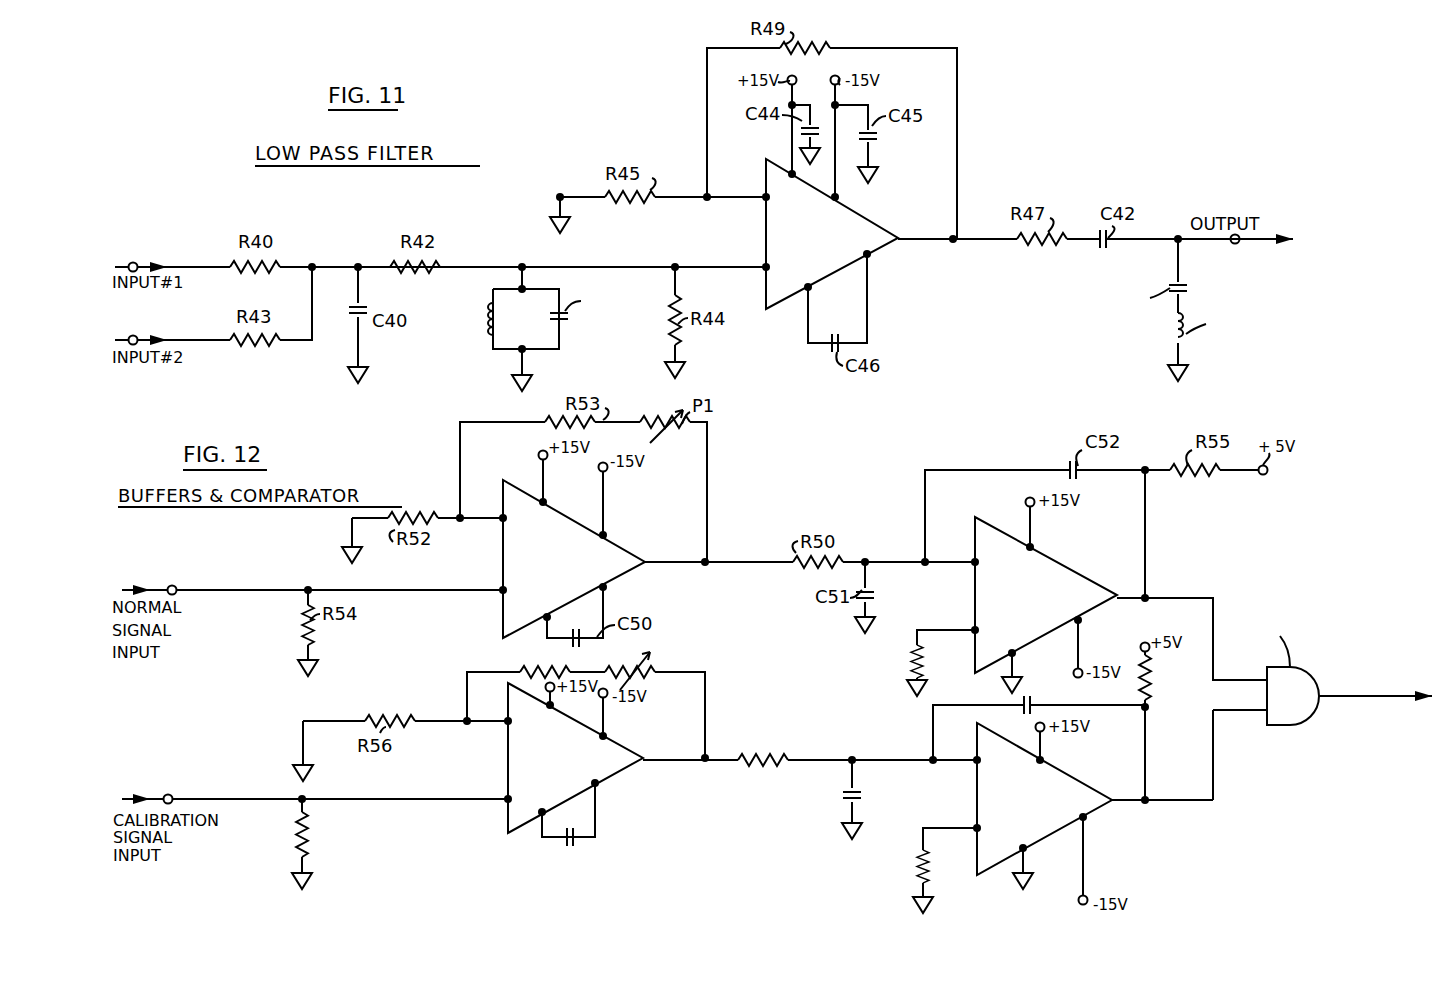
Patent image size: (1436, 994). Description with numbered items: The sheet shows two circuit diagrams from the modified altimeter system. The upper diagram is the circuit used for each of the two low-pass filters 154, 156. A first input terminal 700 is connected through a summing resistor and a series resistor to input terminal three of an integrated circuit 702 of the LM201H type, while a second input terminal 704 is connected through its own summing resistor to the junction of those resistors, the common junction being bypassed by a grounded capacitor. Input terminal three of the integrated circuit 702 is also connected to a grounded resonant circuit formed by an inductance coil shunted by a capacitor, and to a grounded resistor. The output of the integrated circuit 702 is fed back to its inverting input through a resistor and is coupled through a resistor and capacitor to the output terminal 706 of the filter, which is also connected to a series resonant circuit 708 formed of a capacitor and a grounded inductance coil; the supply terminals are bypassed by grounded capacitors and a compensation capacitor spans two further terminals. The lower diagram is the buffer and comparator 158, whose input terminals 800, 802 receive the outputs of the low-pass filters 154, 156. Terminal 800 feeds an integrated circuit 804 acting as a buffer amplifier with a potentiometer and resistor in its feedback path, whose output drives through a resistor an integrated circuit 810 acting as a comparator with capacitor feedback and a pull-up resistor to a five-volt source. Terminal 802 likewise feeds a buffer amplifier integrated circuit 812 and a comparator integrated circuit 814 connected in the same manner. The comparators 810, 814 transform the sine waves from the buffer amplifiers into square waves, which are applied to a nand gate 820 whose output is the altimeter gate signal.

In FIG. 11, the low-pass filter 154 is at (517, 166).
In FIG. 11, the low-pass filter 156 is at (560, 166).
In FIG. 11, the first input terminal 700 is at (133, 262).
In FIG. 11, the input terminal 704 is at (137, 319).
In FIG. 11, the output terminal 706 is at (542, 345).
In FIG. 11, the integrated circuit 702 is at (779, 296).
In FIG. 11, the series resonant circuit 708 is at (1173, 321).
In FIG. 12, the buffer and comparator 158 is at (240, 518).
In FIG. 12, the input terminal 800 is at (176, 569).
In FIG. 12, the input terminal 802 is at (172, 778).
In FIG. 12, the integrated circuit 804 is at (515, 612).
In FIG. 12, the integrated circuit 810 is at (984, 656).
In FIG. 12, the integrated circuit 812 is at (506, 820).
In FIG. 12, the integrated circuit 814 is at (983, 862).
In FIG. 12, the nand gate 820 is at (1291, 725).